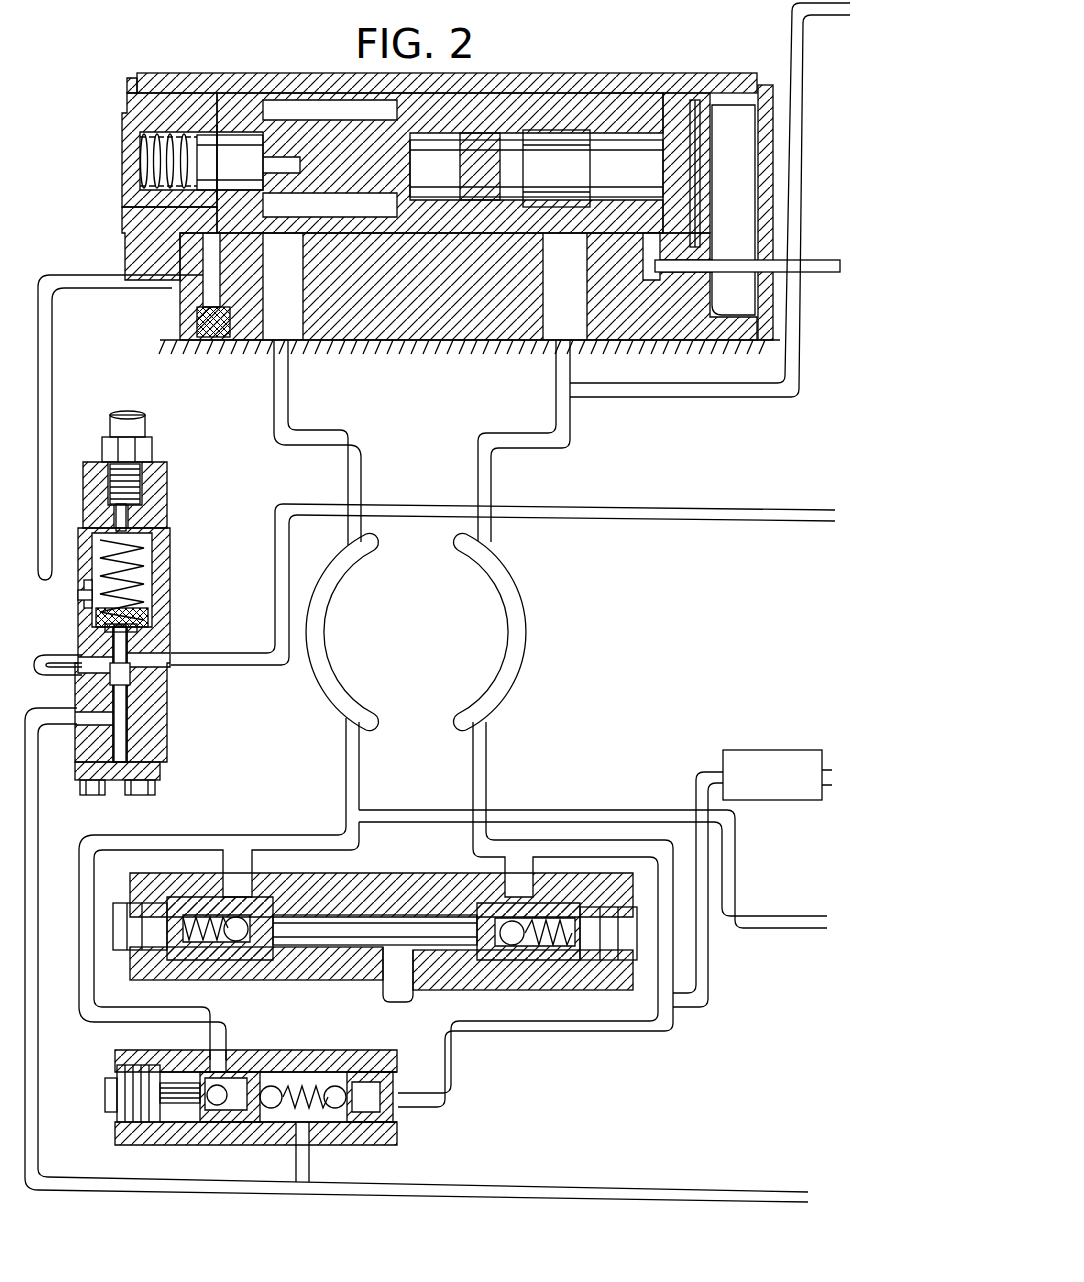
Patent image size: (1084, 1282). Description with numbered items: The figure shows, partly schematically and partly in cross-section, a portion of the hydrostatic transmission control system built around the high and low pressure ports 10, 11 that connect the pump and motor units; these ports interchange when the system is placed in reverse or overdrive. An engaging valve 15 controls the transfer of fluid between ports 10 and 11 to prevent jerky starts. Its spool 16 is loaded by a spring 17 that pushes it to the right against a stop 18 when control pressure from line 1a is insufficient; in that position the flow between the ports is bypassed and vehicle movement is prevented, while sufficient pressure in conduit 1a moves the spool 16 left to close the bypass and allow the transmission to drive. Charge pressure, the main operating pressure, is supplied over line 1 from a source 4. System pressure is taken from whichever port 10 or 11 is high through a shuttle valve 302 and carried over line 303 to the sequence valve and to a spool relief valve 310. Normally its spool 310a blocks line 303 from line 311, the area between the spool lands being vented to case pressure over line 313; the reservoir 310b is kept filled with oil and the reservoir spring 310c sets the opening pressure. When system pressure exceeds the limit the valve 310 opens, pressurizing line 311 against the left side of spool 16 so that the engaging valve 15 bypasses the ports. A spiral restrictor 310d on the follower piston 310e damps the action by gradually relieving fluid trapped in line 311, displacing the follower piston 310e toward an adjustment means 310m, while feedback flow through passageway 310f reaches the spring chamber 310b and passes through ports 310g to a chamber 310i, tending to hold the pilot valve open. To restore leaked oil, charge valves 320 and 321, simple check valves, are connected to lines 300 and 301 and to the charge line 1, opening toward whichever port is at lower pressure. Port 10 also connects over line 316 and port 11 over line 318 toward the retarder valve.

The charge pressure line 1 is at (695, 778).
The control pressure line 1a is at (838, 262).
The charge pressure source 4 is at (777, 752).
The high pressure port 10 is at (335, 568).
The low pressure port 11 is at (488, 580).
The engaging valve 15 is at (451, 199).
The spool 16 is at (312, 137).
The spring 17 is at (160, 100).
The stop 18 is at (598, 130).
The line 300 is at (352, 775).
The line 301 is at (487, 785).
The shuttle valve 302 is at (262, 1062).
The system pressure line 303 is at (34, 1056).
The spool relief valve 310 is at (127, 603).
The spool 310a is at (120, 688).
The reservoir 310b is at (152, 572).
The reservoir spring 310c is at (152, 596).
The spiral restrictor 310d is at (88, 613).
The follower piston 310e is at (152, 636).
The passageway 310f is at (88, 594).
The ports 310g is at (82, 632).
The chamber 310i is at (165, 622).
The adjustment means 310m is at (135, 498).
The line 311 is at (54, 368).
The line 313 is at (278, 668).
The line 316 is at (384, 822).
The line 318 is at (848, 15).
The charge valve 320 is at (262, 905).
The charge valve 321 is at (480, 905).